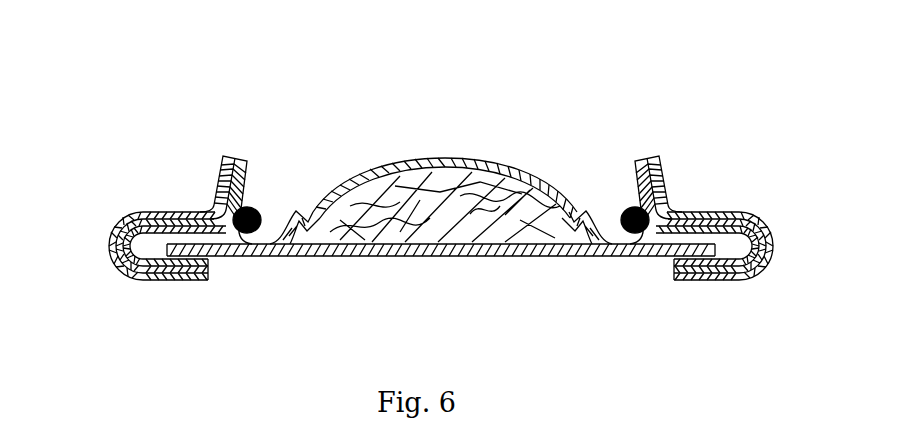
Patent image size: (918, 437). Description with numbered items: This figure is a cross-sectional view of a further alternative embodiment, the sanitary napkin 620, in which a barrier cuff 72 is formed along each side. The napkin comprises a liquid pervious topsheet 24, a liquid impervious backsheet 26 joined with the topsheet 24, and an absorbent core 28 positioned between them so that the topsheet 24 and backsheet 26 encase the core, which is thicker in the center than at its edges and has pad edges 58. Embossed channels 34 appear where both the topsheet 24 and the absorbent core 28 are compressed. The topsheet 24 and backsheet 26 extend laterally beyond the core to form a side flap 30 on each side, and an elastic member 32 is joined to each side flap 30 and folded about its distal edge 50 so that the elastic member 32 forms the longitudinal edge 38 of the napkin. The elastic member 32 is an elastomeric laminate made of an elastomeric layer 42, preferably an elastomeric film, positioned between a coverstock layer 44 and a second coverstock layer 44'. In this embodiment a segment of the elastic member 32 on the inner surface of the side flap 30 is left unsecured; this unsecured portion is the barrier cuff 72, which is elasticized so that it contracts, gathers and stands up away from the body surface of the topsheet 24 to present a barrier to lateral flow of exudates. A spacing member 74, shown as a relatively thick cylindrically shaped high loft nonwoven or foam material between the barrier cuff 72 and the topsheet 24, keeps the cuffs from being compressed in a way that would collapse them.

The sanitary napkin 620 is at (214, 127).
The liquid pervious topsheet 24 is at (415, 160).
The liquid impervious backsheet 26 is at (427, 250).
The absorbent core 28 is at (464, 246).
The side flap 30 is at (235, 258).
The elastic member 32 is at (121, 198).
The embossed channels 34 is at (312, 208).
The longitudinal edge 38 is at (110, 247).
The elastomeric layer 42 is at (180, 282).
The coverstock layer 44 is at (428, 294).
The second coverstock layer 44' is at (478, 308).
The distal edge 50 is at (125, 218).
The pad edges 58 is at (285, 213).
The barrier cuff 72 is at (218, 165).
The spacing member 74 is at (217, 197).